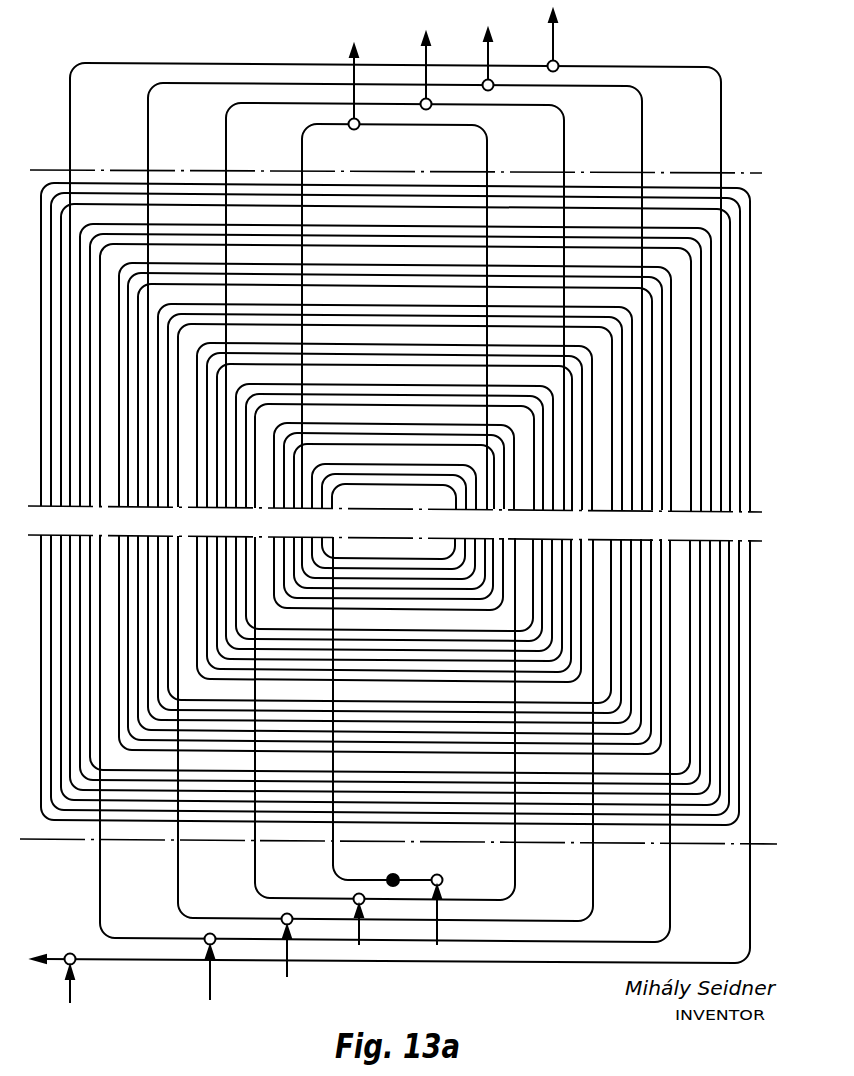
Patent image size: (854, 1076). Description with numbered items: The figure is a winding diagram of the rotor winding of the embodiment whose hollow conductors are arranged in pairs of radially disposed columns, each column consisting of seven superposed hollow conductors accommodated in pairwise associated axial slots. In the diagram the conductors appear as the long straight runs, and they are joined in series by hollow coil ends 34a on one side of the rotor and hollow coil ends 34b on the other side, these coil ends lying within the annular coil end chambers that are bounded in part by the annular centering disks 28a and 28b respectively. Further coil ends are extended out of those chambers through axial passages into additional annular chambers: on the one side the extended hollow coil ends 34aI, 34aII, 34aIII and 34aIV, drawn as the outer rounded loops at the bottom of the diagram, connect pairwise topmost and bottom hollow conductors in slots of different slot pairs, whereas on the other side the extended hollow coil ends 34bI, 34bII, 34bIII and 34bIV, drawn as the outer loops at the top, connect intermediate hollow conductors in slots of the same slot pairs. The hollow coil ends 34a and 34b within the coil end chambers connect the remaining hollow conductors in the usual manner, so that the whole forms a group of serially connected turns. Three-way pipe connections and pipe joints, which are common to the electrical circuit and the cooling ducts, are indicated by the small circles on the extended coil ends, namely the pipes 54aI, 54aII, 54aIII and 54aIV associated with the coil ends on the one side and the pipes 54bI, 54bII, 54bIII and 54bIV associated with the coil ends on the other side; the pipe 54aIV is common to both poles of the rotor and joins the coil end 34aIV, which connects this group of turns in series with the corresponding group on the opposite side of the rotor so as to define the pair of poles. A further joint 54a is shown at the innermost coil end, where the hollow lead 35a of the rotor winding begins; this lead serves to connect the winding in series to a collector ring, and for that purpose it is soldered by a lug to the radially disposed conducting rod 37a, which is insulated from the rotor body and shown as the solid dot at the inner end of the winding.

The hollow coil ends 34b is at (698, 155).
The hollow coil ends 34a is at (704, 827).
The annular centering disk 28b is at (395, 287).
The annular centering disk 28a is at (391, 749).
The extended hollow coil end 34bI is at (304, 135).
The extended hollow coil end 34bII is at (227, 122).
The extended hollow coil end 34bIII is at (150, 117).
The extended hollow coil end 34bIV is at (72, 117).
The extended hollow coil end 34aI is at (512, 858).
The extended hollow coil end 34aII is at (512, 900).
The extended hollow coil end 34aIII is at (670, 902).
The extended hollow coil end 34aIV is at (750, 902).
The pipe 54bI is at (348, 124).
The pipe 54bII is at (432, 106).
The pipe 54bIII is at (484, 80).
The pipe 54bIV is at (558, 62).
The terminal of coil a 54a is at (452, 868).
The pipe 54aI is at (366, 904).
The pipe 54aII is at (292, 925).
The pipe 54aIII is at (215, 945).
The pipe 54aIV is at (75, 963).
The hollow lead 35a is at (333, 858).
The radially disposed rod 37a is at (393, 876).